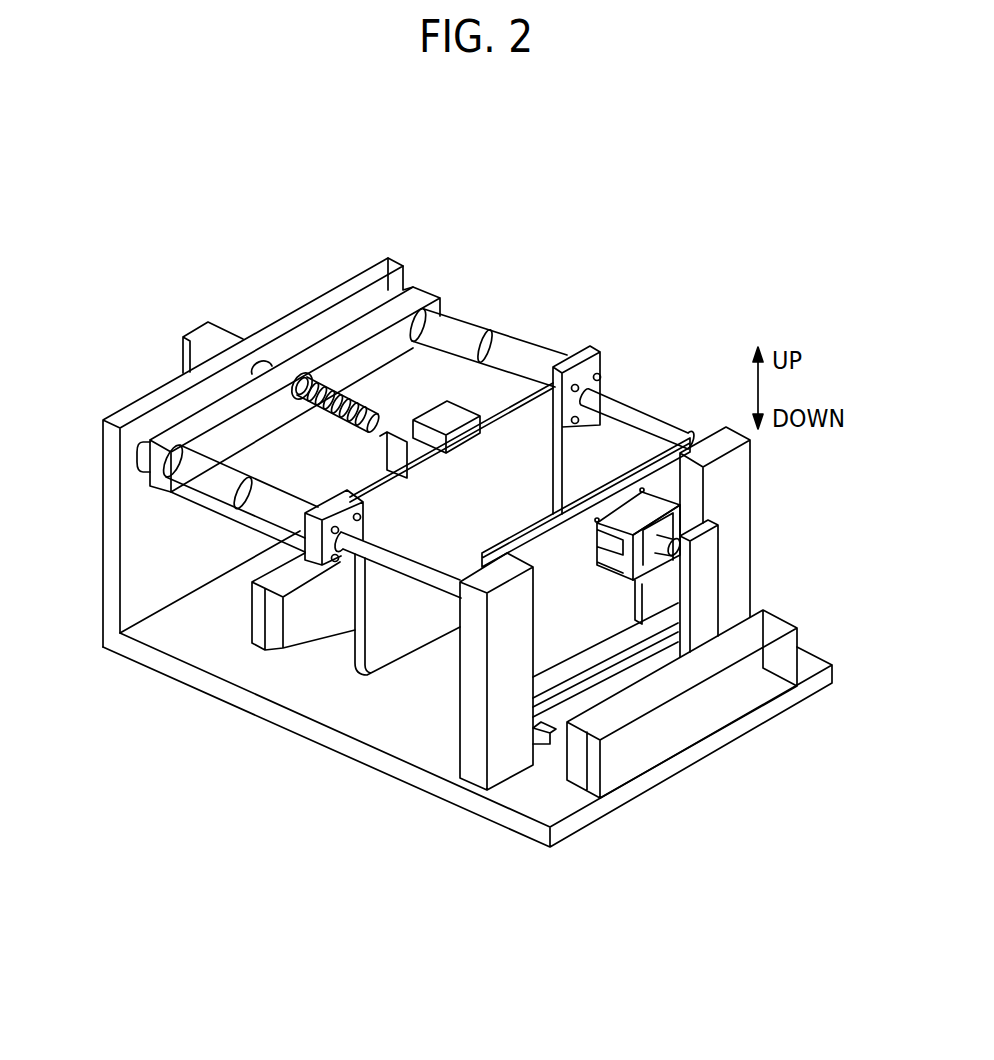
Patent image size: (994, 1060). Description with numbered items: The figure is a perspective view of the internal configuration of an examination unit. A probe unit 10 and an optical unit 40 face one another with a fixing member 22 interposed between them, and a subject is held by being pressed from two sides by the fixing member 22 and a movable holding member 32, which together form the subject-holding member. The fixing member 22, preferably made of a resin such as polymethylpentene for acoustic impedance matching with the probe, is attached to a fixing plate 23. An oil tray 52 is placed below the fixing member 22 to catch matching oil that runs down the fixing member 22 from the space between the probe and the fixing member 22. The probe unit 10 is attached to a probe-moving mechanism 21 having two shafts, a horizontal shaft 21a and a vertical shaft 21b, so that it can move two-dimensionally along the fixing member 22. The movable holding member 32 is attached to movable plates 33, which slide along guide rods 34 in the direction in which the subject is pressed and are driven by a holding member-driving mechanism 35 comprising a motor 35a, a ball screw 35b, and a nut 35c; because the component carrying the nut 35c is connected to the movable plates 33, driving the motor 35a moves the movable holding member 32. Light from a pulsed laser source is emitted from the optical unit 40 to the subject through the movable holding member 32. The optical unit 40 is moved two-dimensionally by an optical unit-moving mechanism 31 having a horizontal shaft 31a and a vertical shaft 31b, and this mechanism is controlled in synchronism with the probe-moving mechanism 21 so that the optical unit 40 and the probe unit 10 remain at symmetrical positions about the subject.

The probe unit 10 is at (697, 512).
The probe-moving mechanism 21 is at (867, 545).
The horizontal shaft 21a is at (760, 622).
The vertical shaft 21b is at (705, 595).
The fixing member 22 is at (680, 440).
The fixing plate 23 is at (740, 550).
The optical unit-moving mechanism 31 is at (88, 678).
The horizontal shaft 31a is at (270, 590).
The vertical shaft 31b is at (300, 512).
The movable holding member 32 is at (395, 640).
The movable plates 33 is at (313, 550).
The guide rods 34 is at (607, 403).
The holding member-driving mechanism 35 is at (322, 252).
The motor 35a is at (213, 333).
The ball screw 35b is at (330, 390).
The nut 35c is at (300, 378).
The optical unit 40 is at (484, 392).
The oil tray 52 is at (550, 735).